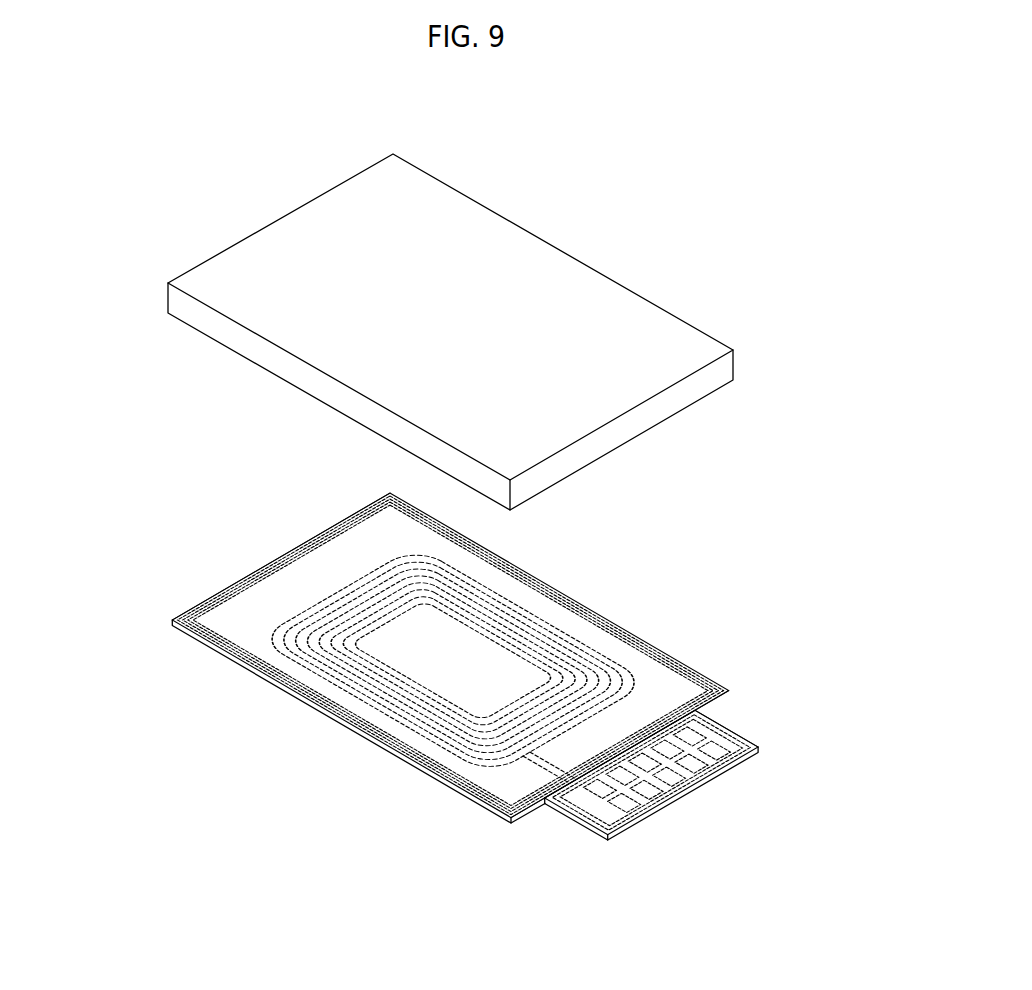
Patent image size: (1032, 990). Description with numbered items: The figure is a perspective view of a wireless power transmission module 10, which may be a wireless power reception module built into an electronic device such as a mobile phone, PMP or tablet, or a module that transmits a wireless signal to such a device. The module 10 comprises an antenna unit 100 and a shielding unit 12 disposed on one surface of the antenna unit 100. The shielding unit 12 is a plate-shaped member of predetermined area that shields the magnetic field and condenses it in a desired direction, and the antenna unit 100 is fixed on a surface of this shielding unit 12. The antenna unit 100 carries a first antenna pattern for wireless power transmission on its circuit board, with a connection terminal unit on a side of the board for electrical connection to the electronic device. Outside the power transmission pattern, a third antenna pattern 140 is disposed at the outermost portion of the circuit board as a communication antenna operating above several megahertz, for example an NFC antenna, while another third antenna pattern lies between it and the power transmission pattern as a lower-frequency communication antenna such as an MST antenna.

The wireless power transmission module 10 is at (450, 310).
The shielding unit 12 is at (660, 300).
The antenna unit 100 is at (481, 675).
The third antenna pattern 140 is at (472, 807).